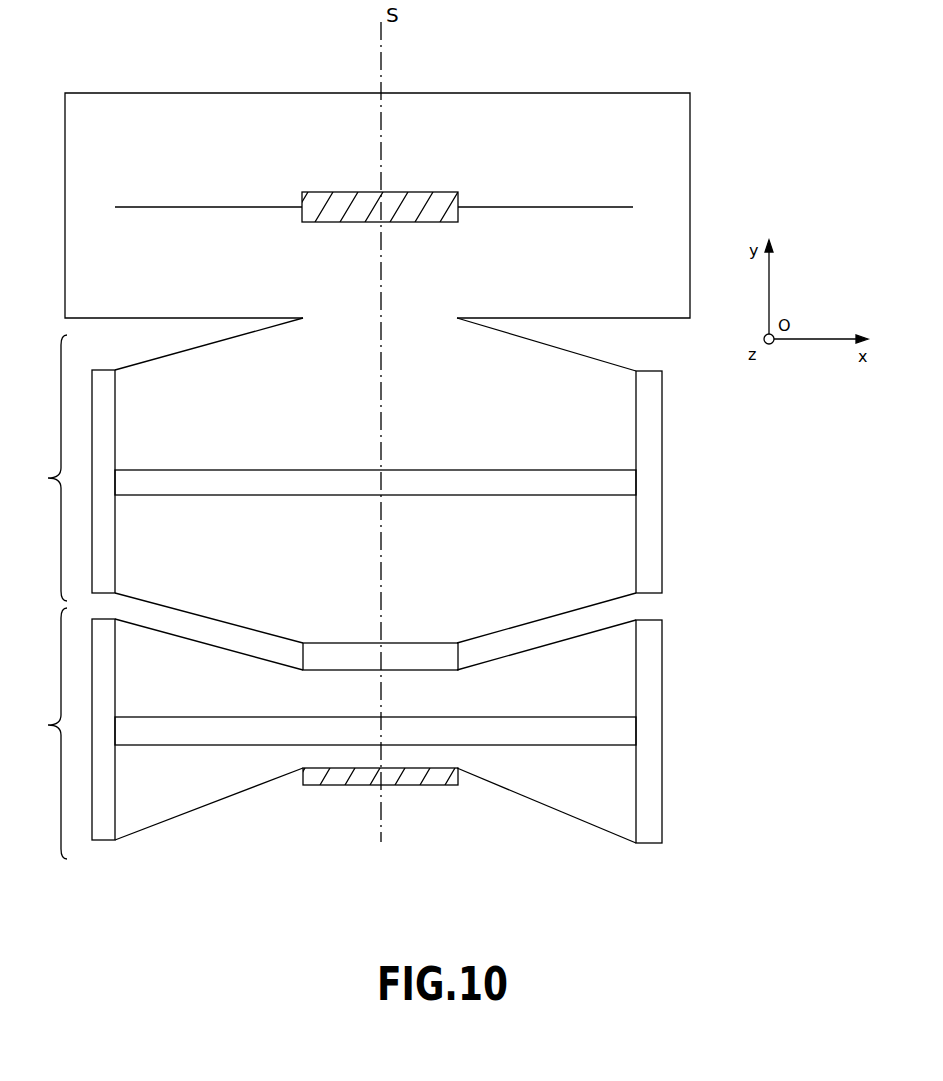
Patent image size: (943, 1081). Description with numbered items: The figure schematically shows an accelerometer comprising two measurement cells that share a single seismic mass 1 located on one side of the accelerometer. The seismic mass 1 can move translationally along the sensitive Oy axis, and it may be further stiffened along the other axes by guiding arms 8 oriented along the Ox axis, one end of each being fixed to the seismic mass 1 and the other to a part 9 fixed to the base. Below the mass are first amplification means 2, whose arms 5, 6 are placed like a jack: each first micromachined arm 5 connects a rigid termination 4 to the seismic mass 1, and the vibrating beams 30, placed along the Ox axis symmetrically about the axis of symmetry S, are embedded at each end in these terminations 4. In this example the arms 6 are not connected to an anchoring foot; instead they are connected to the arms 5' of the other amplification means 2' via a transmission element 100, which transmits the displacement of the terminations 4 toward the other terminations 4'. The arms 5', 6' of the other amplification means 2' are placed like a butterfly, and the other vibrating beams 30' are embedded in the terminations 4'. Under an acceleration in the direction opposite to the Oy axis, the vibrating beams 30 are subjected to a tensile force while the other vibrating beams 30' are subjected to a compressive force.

The seismic mass 1 is at (665, 145).
The guiding arm 8 is at (585, 207).
The part fixed to the base 9 is at (413, 210).
The first amplification means 2 is at (44, 468).
The other amplification means 2' is at (44, 733).
The first micromachined arm 5 is at (396, 344).
The vibrating beams 30 is at (413, 455).
The rigid termination 4 is at (398, 481).
The second micromachined arm 6 is at (409, 618).
The transmission element 100 is at (430, 657).
The arm of the other amplification means 5' is at (413, 651).
The other vibrating beams 30' is at (418, 744).
The other terminations 4' is at (401, 731).
The arm of the other amplification means 6' is at (375, 819).